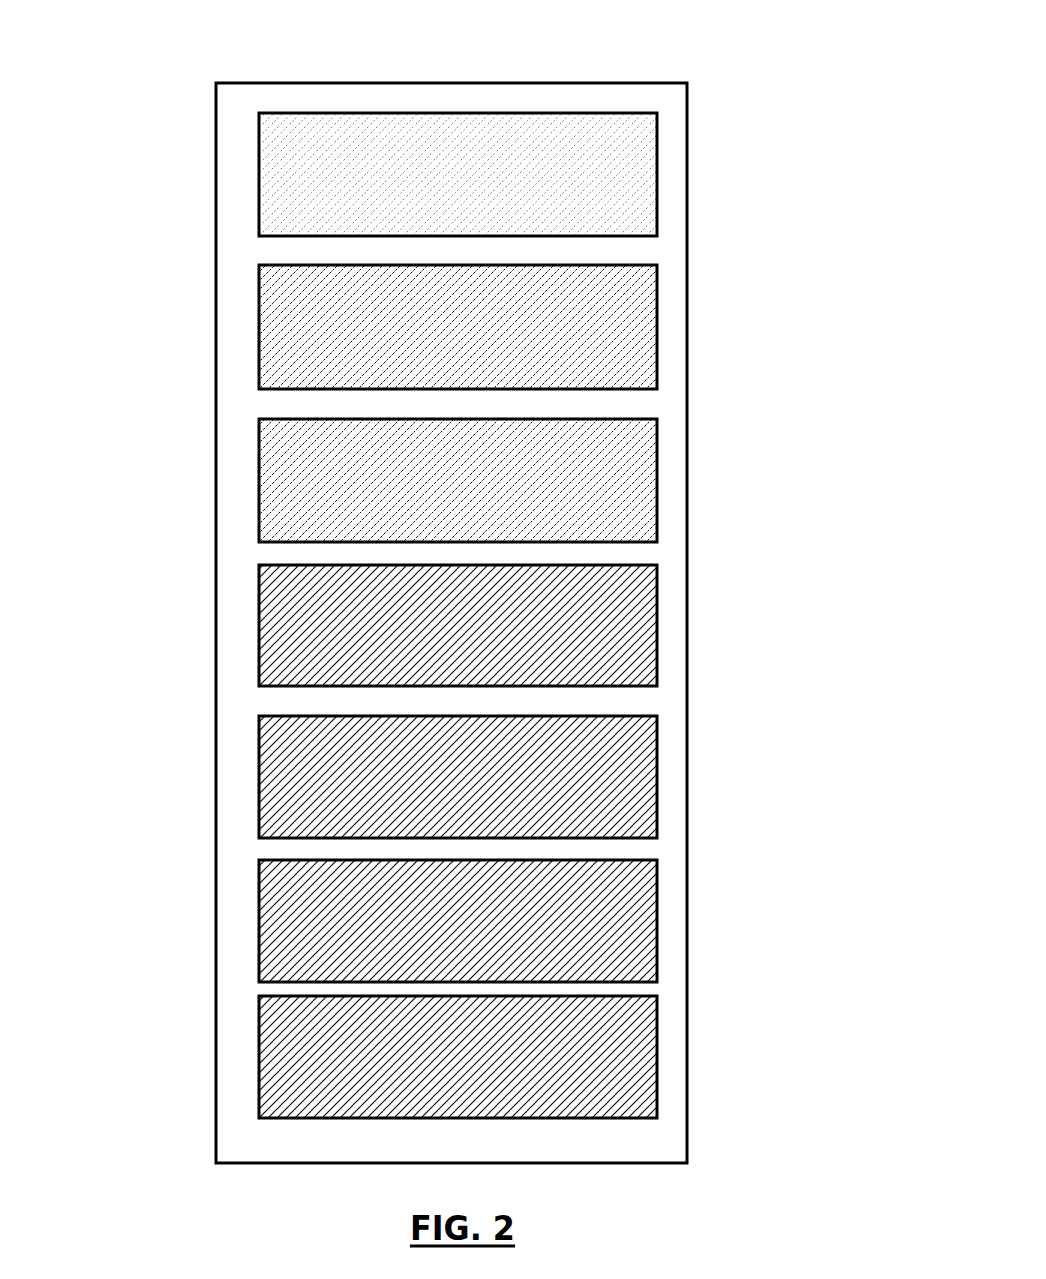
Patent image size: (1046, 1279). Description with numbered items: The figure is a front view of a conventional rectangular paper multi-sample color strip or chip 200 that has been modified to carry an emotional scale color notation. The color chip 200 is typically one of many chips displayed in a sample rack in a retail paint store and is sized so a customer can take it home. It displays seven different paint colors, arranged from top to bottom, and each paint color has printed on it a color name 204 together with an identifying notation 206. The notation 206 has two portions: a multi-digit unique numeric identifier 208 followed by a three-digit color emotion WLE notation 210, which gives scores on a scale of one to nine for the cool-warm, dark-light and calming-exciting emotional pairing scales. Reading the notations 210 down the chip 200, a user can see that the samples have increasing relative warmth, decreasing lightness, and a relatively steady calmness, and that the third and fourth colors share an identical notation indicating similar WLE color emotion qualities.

The color chip 200 is at (687, 127).
The color name 204 is at (520, 166).
The identifying notation 206 is at (465, 203).
The color code 208 is at (440, 212).
The color emotion WLE notation 210 is at (646, 236).